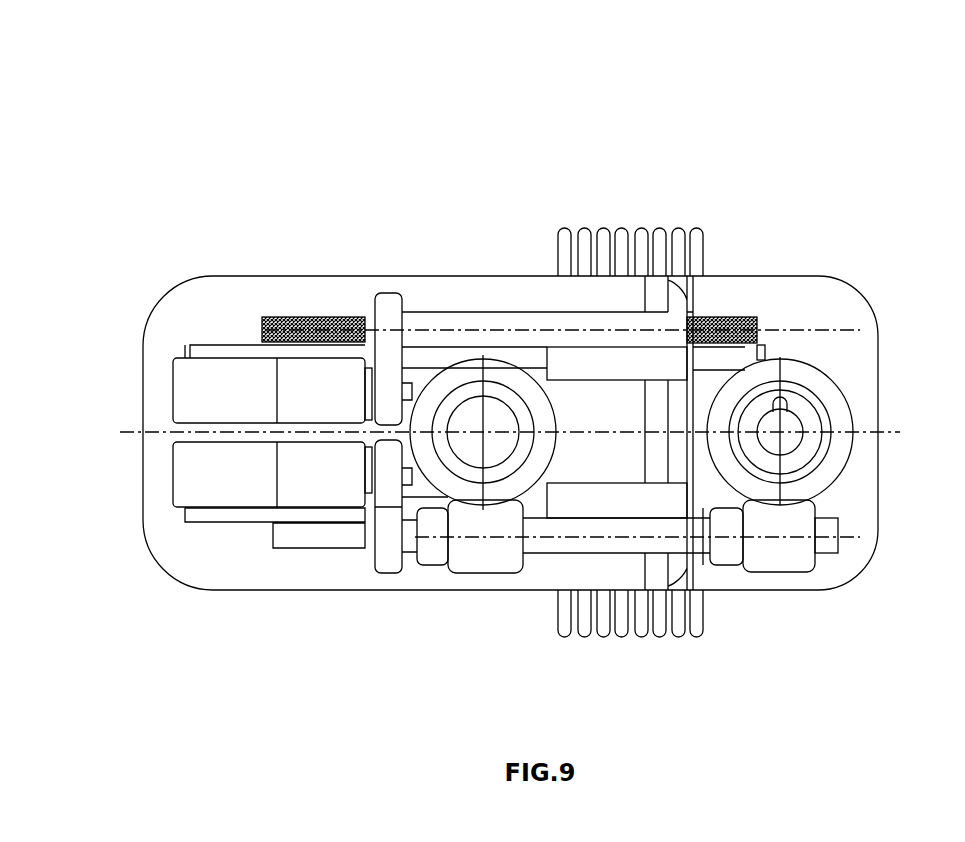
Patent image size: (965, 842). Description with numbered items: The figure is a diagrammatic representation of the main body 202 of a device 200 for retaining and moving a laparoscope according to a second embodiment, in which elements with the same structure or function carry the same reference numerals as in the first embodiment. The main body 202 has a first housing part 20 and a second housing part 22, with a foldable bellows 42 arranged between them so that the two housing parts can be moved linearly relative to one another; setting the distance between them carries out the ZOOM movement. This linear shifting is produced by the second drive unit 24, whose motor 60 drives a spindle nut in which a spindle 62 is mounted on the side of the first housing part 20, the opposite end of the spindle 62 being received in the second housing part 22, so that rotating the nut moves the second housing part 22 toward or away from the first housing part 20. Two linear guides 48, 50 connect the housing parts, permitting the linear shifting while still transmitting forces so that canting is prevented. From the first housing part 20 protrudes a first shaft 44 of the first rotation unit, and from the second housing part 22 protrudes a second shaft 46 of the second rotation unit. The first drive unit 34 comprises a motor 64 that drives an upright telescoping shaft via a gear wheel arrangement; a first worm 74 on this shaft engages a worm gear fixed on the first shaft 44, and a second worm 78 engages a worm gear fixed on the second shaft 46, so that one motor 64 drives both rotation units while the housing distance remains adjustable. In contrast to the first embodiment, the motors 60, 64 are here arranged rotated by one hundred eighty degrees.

The device 200 is at (760, 120).
The main body 202 is at (619, 188).
The first housing part 20 is at (432, 274).
The second housing part 22 is at (862, 302).
The second drive unit 24 is at (140, 341).
The first drive unit 34 is at (136, 527).
The foldable bellows 42 is at (607, 638).
The first shaft 44 is at (493, 420).
The second shaft 46 is at (796, 413).
The linear guide 48 is at (703, 508).
The linear guide 50 is at (755, 355).
The motor 60 is at (303, 375).
The spindle 62 is at (335, 318).
The motor 64 is at (307, 480).
The first worm 74 is at (482, 562).
The second worm 78 is at (783, 557).